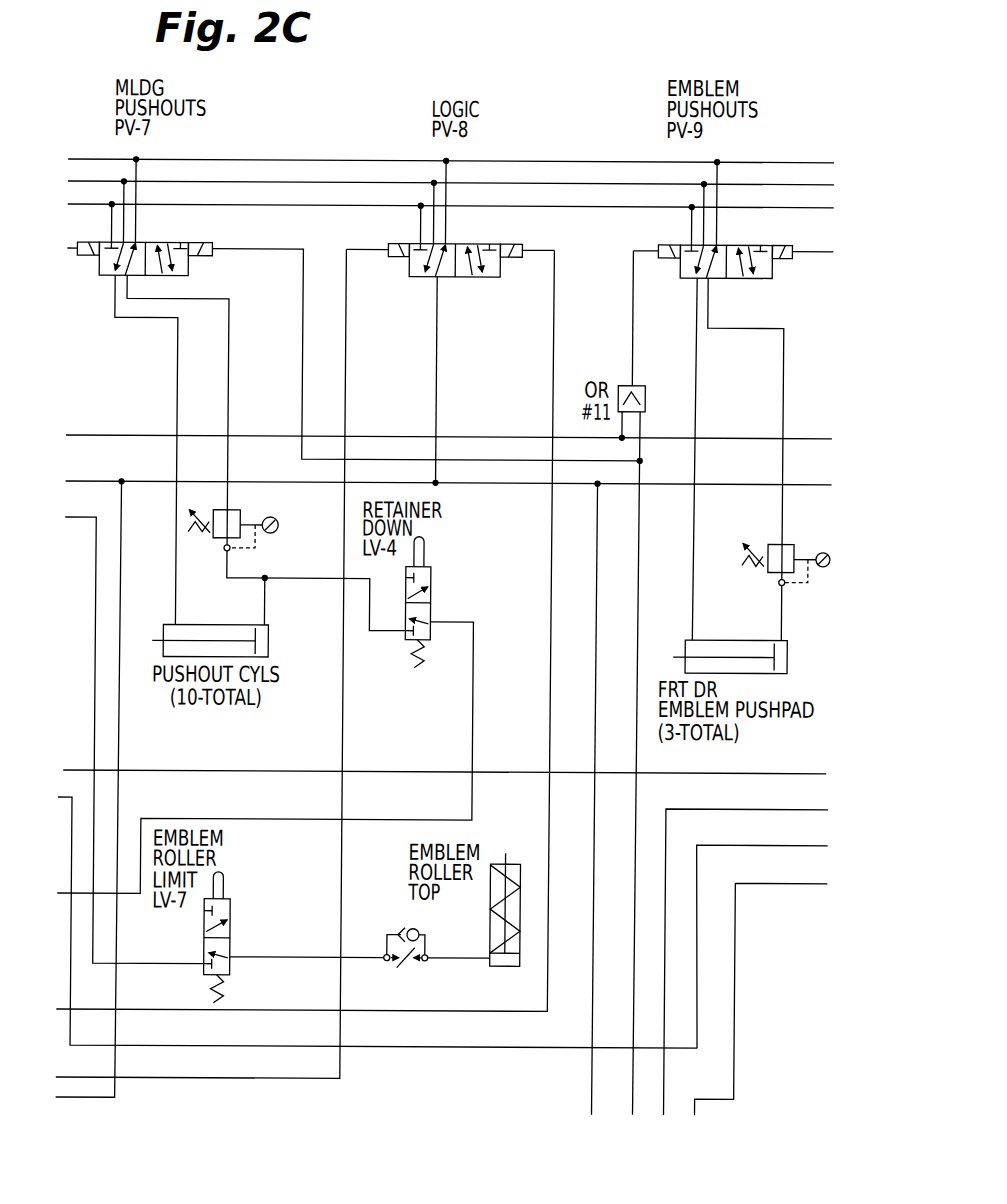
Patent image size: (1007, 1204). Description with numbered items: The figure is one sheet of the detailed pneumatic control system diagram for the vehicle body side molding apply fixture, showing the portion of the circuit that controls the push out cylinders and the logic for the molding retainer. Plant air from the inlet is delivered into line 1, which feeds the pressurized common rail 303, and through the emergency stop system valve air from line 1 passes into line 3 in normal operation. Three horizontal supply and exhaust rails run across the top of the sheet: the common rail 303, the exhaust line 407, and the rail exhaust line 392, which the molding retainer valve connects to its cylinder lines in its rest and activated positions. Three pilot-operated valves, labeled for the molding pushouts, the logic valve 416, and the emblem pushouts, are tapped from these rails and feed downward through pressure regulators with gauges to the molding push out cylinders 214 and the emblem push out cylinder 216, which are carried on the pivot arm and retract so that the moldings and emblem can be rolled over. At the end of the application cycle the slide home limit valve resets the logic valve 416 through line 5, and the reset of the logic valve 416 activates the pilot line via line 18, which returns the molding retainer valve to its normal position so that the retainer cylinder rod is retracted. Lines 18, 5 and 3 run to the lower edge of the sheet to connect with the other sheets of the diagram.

The line 1 is at (242, 769).
The line 3 is at (239, 1044).
The line 5 is at (346, 372).
The line 18 is at (90, 481).
The molding push out cylinders 214 is at (210, 677).
The emblem push out cylinder 216 is at (790, 654).
The common rail 303 is at (808, 181).
The rail exhaust line 392 is at (785, 204).
The exhaust line 407 is at (777, 159).
The logic valve 416 is at (480, 275).